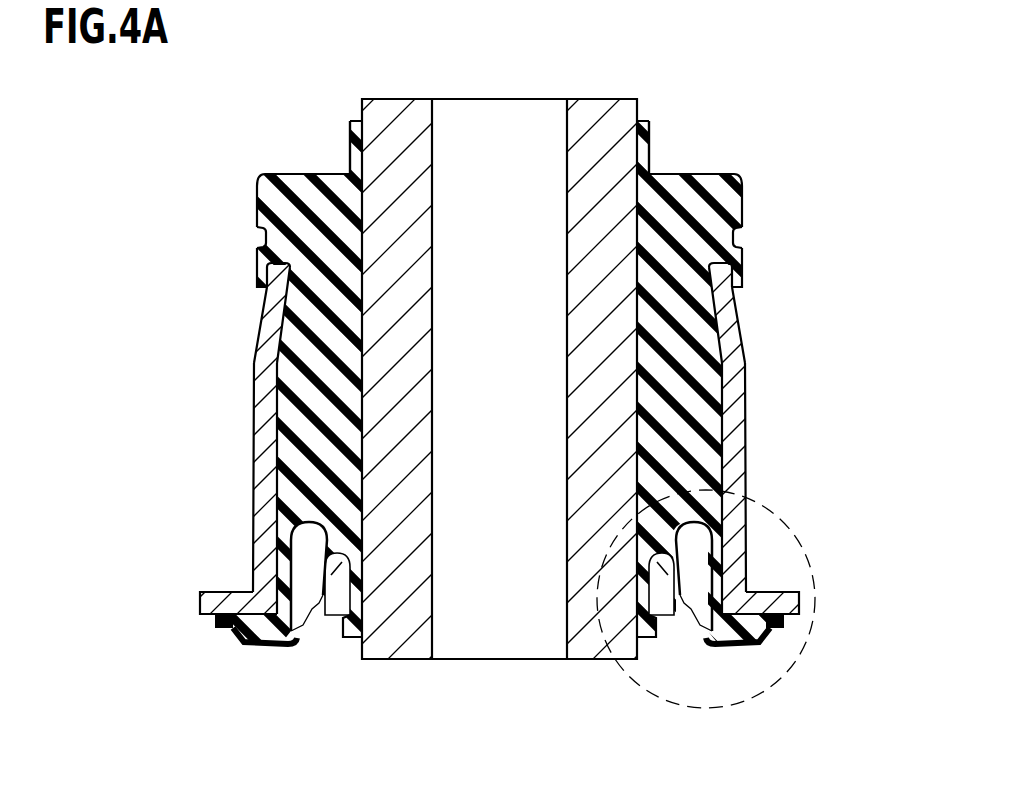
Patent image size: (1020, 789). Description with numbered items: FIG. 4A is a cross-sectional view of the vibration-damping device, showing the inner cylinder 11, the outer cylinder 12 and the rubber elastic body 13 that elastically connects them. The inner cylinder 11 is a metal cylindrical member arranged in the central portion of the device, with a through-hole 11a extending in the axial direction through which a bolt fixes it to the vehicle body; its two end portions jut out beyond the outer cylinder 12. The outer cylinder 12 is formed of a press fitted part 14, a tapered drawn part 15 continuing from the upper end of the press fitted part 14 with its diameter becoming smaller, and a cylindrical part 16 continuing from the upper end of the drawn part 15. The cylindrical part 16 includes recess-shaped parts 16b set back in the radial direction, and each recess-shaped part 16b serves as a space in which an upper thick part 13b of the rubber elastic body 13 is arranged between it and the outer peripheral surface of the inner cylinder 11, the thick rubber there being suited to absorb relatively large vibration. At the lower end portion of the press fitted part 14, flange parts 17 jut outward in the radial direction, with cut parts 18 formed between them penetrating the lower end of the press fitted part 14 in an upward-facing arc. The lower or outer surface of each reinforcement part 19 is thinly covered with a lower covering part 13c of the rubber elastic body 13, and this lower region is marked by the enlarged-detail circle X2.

The inner cylinder 11 is at (395, 108).
The through-hole 11a is at (566, 128).
The outer cylinder 12 is at (211, 299).
The rubber elastic body 13 is at (758, 208).
The upper thick part 13b is at (320, 210).
The lower covering part 13c is at (260, 648).
The press fitted part 14 is at (748, 447).
The drawn part 15 is at (740, 332).
The cylindrical part 16 is at (735, 297).
The recess-shaped part 16b is at (284, 262).
The flange part 17 is at (203, 603).
The cut part 18 is at (335, 607).
The reinforcement part 19 is at (263, 648).
The enlarged region X2 is at (800, 658).